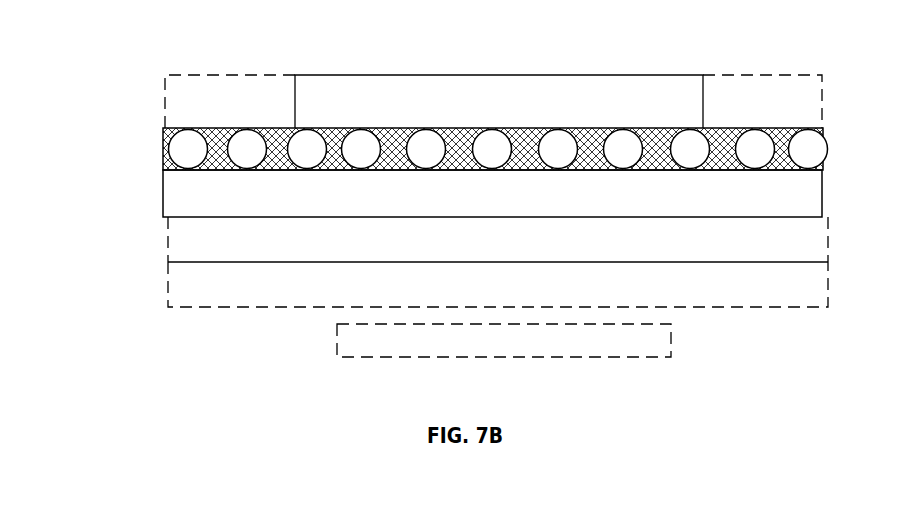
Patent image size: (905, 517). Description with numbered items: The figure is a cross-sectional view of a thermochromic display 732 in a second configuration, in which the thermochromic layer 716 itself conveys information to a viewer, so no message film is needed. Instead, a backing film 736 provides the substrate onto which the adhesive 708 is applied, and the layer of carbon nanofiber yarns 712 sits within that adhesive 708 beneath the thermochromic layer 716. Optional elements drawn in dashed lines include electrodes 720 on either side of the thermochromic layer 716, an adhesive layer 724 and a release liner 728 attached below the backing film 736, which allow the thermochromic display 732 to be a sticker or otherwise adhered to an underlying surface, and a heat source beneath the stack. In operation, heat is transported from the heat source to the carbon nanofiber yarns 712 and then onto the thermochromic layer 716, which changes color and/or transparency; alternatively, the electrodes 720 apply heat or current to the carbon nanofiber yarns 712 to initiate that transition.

The adhesive 708 is at (727, 160).
The carbon nanofiber yarns 712 is at (183, 153).
The thermochromic layer 716 is at (618, 113).
The electrodes 720 is at (780, 126).
The adhesive layer 724 is at (587, 250).
The release liner 728 is at (578, 295).
The thermochromic display 732 is at (482, 415).
The backing film 736 is at (570, 203).